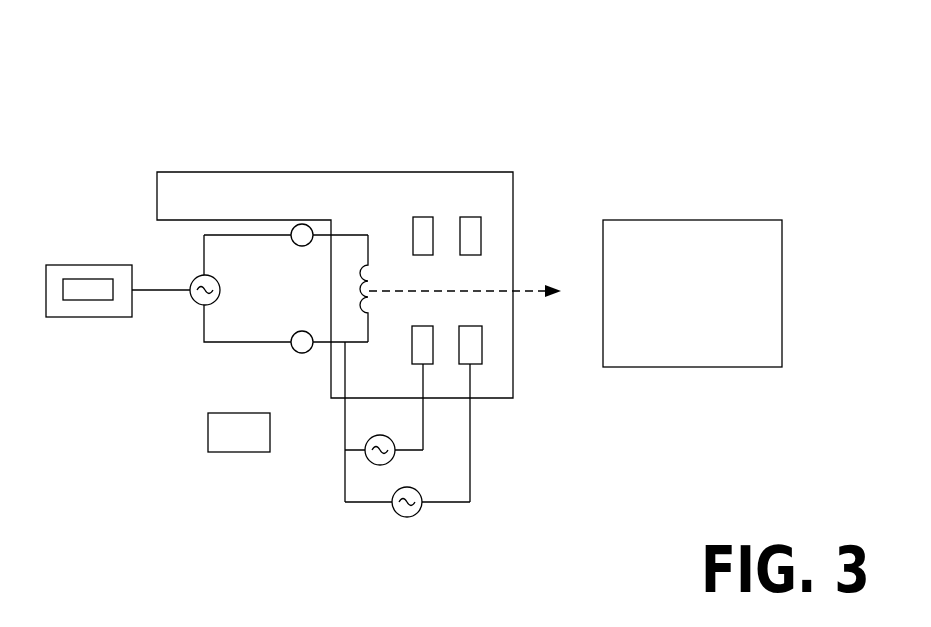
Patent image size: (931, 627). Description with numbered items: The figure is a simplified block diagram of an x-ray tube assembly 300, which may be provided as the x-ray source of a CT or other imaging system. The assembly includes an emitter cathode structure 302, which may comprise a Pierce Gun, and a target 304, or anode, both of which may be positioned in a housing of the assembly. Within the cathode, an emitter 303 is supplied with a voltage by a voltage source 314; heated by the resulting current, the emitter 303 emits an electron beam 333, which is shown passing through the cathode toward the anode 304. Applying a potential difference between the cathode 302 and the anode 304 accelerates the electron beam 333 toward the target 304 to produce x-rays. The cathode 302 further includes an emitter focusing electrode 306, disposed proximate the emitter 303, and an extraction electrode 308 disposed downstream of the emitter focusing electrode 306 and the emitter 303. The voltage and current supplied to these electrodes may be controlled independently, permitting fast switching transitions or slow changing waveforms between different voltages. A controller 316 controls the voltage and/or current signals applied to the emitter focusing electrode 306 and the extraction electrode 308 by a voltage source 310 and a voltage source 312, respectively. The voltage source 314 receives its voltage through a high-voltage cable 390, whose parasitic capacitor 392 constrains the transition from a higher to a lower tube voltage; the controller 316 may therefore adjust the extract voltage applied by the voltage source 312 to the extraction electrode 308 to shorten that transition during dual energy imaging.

The x-ray tube assembly 300 is at (740, 57).
The emitter cathode structure 302 is at (371, 172).
The emitter 303 is at (363, 315).
The target 304 is at (697, 220).
The emitter focusing electrode 306 is at (423, 217).
The extraction electrode 308 is at (470, 217).
The voltage source 310 is at (377, 465).
The voltage source 312 is at (408, 517).
The voltage source 314 is at (196, 303).
The controller 316 is at (208, 432).
The electron beam 333 is at (532, 291).
The high-voltage cable 390 is at (52, 265).
The parasitic capacitor 392 is at (97, 279).